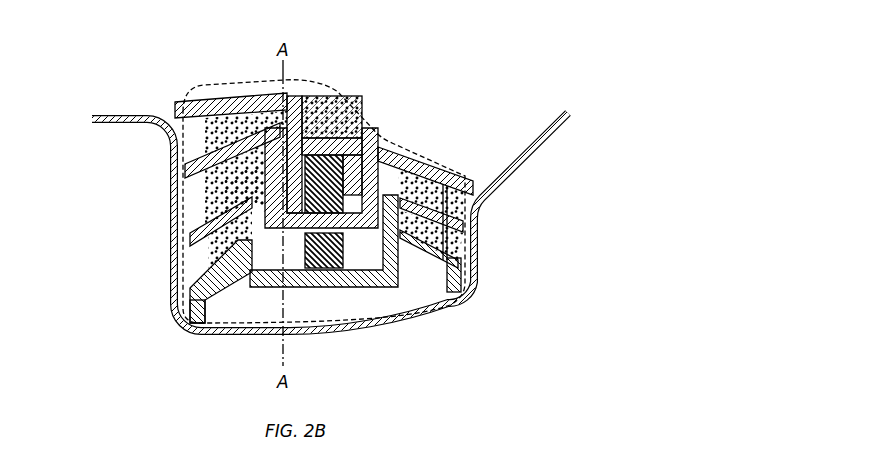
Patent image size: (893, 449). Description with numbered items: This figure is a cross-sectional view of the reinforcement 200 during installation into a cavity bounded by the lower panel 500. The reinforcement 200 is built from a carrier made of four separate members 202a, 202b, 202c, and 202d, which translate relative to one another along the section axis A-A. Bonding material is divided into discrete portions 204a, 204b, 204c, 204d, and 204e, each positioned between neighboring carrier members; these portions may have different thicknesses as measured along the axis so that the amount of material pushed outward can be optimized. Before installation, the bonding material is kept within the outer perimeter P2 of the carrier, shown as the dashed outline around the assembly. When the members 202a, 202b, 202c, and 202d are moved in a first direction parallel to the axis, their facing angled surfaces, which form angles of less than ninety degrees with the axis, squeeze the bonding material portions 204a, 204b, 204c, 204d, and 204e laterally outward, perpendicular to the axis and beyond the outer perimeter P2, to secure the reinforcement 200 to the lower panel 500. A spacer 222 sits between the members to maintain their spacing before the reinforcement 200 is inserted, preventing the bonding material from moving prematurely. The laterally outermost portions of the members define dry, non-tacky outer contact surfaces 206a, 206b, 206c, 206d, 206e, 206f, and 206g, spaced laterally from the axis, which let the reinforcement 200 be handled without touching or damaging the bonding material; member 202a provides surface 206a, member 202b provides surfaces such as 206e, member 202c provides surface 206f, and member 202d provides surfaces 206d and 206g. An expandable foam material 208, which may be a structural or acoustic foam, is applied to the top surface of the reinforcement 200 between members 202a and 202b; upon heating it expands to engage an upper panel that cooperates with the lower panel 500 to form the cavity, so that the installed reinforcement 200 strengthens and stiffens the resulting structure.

The reinforcement 200 is at (222, 52).
The carrier member 202a is at (197, 108).
The carrier member 202b is at (195, 168).
The carrier member 202c is at (195, 240).
The carrier member 202d is at (185, 334).
The discrete portion of bonding material 204a is at (212, 130).
The discrete portion of bonding material 204b is at (230, 212).
The discrete portion of bonding material 204c is at (192, 292).
The discrete portion of bonding material 204d is at (437, 197).
The discrete portion of bonding material 204e is at (428, 257).
The outer contact surface 206a is at (170, 104).
The second rigid section 206b is at (218, 192).
The outer contact surface 206c is at (215, 250).
The outer contact surface 206d is at (187, 302).
The outer contact surface 206e is at (472, 205).
The outer contact surface 206f is at (462, 225).
The outer contact surface 206g is at (470, 282).
The expandable foam material 208 is at (325, 108).
The spacer 222 is at (323, 273).
The lower panel 500 is at (548, 127).
The outer perimeter P2 is at (403, 143).